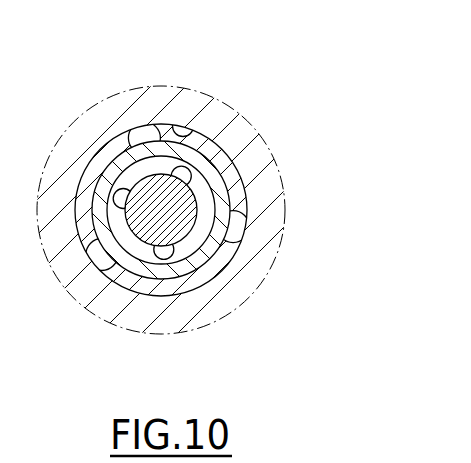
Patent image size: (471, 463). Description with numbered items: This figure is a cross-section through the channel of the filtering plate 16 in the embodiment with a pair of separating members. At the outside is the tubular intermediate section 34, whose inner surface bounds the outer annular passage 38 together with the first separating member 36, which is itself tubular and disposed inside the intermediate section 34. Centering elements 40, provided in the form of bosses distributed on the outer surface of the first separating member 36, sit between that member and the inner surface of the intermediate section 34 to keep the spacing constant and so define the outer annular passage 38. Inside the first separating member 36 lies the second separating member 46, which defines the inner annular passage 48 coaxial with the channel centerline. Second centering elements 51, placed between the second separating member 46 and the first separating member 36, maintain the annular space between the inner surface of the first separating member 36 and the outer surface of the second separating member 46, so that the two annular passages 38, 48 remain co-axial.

The filtering plate 16 is at (162, 103).
The intermediate section 34 is at (204, 156).
The first separating member 36 is at (221, 172).
The outer annular passage 38 is at (215, 127).
The centering elements 40 is at (140, 137).
The second separating member 46 is at (190, 213).
The inner annular passage 48 is at (203, 200).
The second centering elements 51 is at (114, 197).